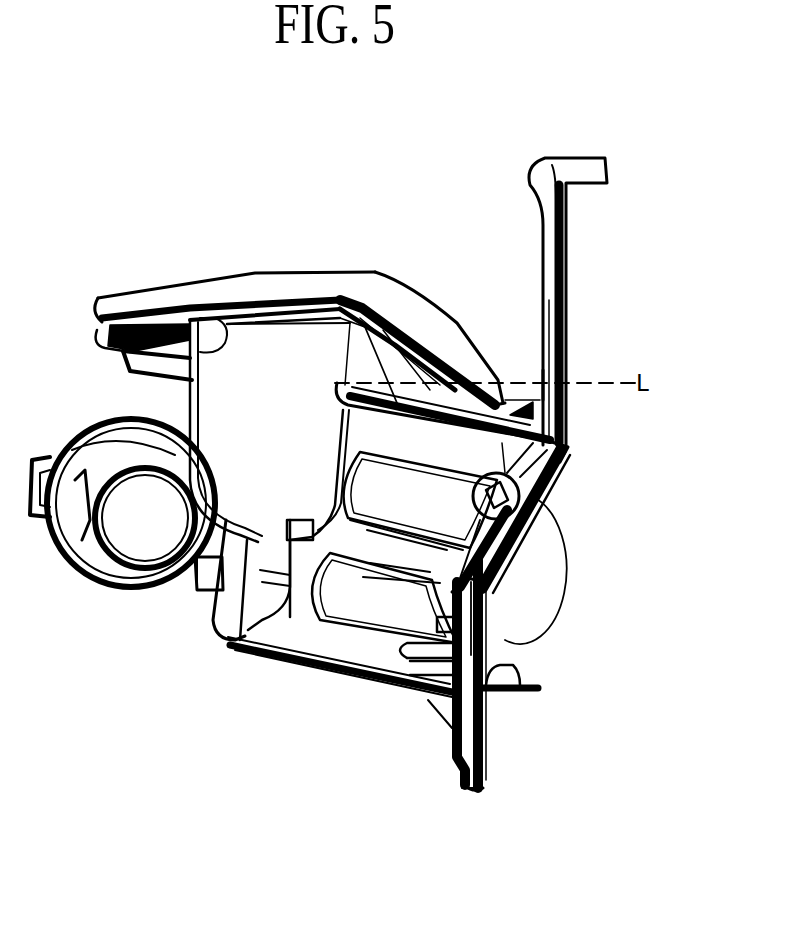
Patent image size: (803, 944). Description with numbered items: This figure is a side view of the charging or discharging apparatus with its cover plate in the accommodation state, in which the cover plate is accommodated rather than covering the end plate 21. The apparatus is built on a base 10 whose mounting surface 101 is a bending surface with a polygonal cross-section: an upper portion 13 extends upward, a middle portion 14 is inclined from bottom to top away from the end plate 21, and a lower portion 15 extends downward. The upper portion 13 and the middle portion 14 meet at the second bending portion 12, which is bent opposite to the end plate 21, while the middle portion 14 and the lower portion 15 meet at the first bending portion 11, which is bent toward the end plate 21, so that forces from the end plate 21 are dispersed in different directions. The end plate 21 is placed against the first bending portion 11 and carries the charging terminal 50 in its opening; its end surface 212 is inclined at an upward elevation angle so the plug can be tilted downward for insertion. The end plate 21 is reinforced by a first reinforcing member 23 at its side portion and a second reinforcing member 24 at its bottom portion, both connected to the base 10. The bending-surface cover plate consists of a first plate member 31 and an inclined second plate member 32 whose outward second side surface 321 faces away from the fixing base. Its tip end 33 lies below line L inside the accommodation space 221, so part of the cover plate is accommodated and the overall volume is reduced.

The base 10 is at (483, 743).
The mounting surface 101 is at (415, 776).
The first bending portion 11 is at (490, 593).
The second bending portion 12 is at (567, 455).
The upper portion 13 is at (567, 331).
The middle portion 14 is at (535, 482).
The lower portion 15 is at (488, 660).
The end plate 21 is at (232, 646).
The end surface 212 is at (172, 615).
The accommodation space 221 is at (521, 367).
The first reinforcing member 23 is at (300, 637).
The second reinforcing member 24 is at (343, 670).
The first plate member 31 is at (446, 333).
The second plate member 32 is at (207, 289).
The second side surface 321 is at (290, 245).
The tip end 33 is at (567, 401).
The charging terminal 50 is at (107, 437).